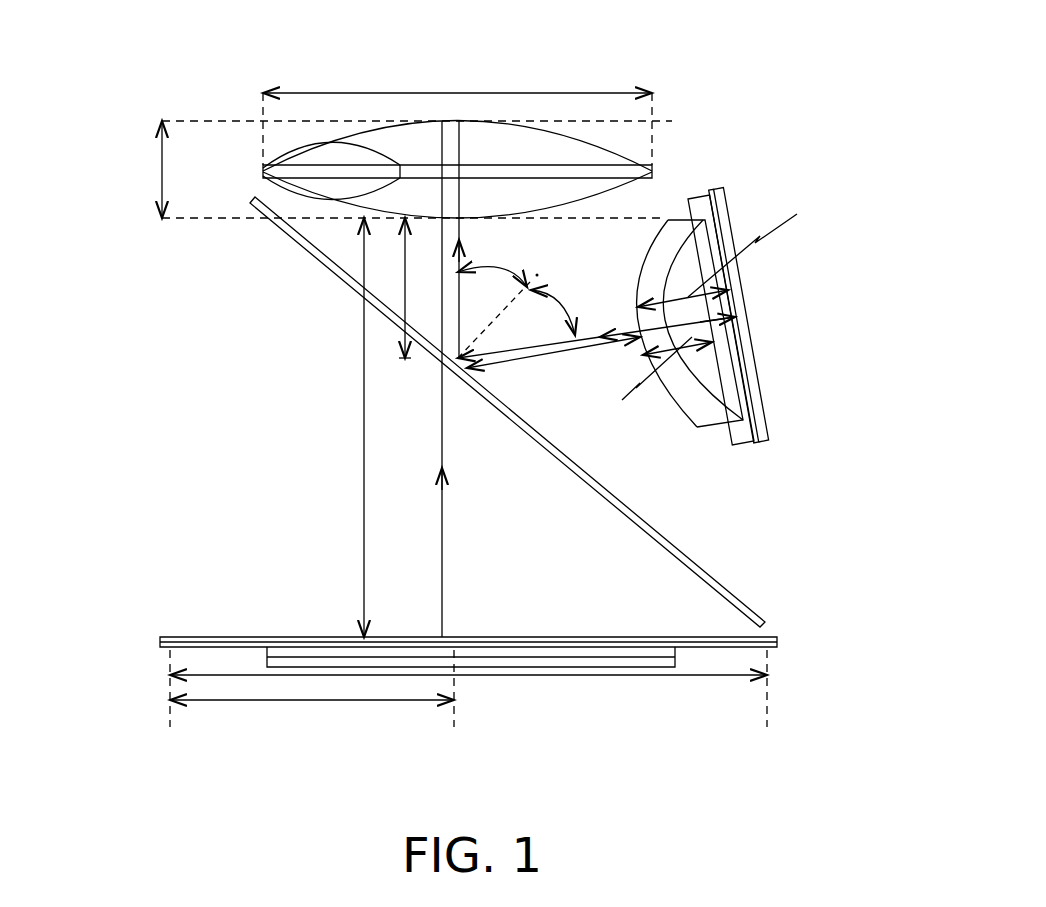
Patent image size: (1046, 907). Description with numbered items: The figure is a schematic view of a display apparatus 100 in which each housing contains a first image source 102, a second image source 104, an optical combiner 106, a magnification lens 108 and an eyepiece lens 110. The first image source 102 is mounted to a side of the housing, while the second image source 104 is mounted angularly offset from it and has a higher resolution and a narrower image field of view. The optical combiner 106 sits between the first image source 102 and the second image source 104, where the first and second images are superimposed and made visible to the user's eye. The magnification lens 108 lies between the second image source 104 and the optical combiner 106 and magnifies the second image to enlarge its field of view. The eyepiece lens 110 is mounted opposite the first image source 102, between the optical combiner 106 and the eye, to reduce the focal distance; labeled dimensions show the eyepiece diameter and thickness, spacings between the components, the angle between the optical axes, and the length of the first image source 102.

The display apparatus 100 is at (769, 47).
The first image source 102 is at (167, 636).
The second image source 104 is at (762, 383).
The optical combiner 106 is at (720, 580).
The magnification lens 108 is at (697, 425).
The eyepiece lens 110 is at (292, 153).